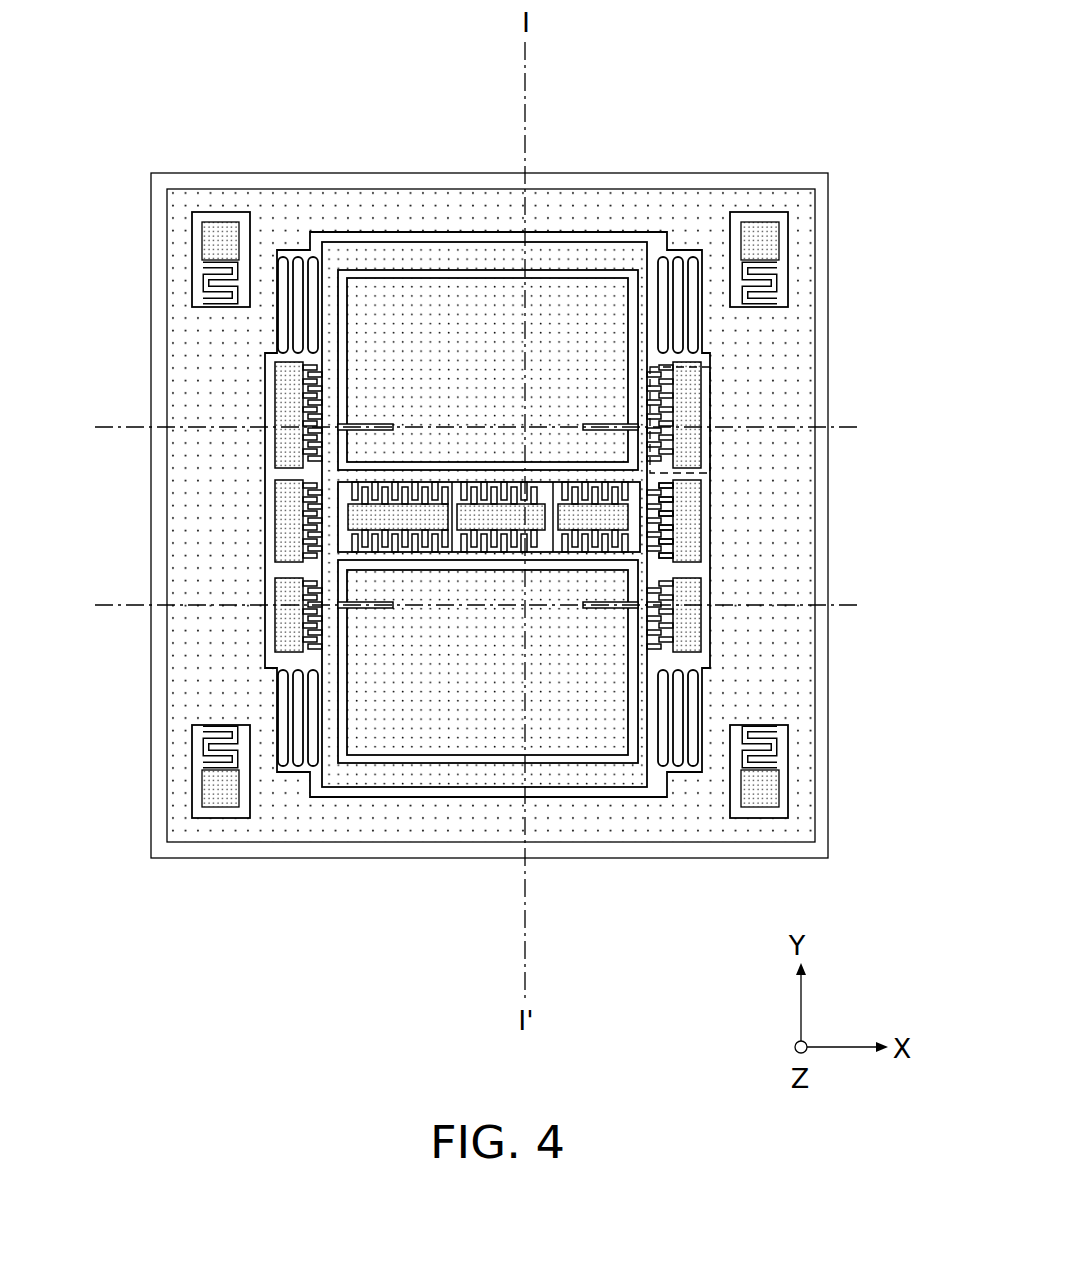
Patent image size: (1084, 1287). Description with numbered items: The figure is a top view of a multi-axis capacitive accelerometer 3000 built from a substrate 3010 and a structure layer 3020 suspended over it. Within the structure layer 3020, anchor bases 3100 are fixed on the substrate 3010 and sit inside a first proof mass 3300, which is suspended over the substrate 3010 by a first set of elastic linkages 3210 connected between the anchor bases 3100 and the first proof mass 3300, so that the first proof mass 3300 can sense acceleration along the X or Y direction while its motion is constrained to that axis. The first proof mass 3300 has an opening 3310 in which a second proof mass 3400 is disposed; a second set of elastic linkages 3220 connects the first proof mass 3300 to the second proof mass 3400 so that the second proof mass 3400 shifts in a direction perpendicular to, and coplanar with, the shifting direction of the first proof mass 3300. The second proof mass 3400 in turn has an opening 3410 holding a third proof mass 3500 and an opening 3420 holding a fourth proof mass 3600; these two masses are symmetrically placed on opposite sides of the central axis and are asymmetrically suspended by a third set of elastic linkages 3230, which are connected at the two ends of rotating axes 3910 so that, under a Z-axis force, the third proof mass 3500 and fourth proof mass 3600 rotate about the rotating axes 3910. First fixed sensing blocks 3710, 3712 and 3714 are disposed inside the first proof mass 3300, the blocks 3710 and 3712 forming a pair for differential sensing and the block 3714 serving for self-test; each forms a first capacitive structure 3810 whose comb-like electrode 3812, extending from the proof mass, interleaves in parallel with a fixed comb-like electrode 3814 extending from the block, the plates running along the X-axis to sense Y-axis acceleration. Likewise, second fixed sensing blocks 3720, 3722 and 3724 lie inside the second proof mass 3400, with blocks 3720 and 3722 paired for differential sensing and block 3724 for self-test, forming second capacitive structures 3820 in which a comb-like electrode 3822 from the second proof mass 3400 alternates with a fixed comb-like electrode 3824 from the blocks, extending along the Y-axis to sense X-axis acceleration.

The multi-axis capacitive accelerometer 3000 is at (897, 55).
The substrate 3010 is at (815, 173).
The structure layer 3020 is at (708, 182).
The anchor base 3100 is at (210, 240).
The first set of elastic linkages 3210 is at (210, 293).
The second set of elastic linkages 3220 is at (300, 250).
The third set of elastic linkages 3230 is at (360, 427).
The first proof mass 3300 is at (785, 330).
The opening 3310 is at (567, 232).
The second proof mass 3400 is at (488, 257).
The opening 3410 is at (612, 268).
The opening 3420 is at (437, 768).
The third proof mass 3500 is at (419, 290).
The fourth proof mass 3600 is at (365, 732).
The first fixed sensing block 3710 is at (657, 367).
The first fixed sensing block 3712 is at (675, 548).
The first fixed sensing block 3714 is at (680, 637).
The second fixed sensing block 3720 is at (375, 522).
The second fixed sensing block 3722 is at (465, 522).
The second fixed sensing block 3724 is at (590, 503).
The first capacitive structure 3810 is at (705, 457).
The comb-like electrode 3812 is at (675, 492).
The fixed comb-like electrode 3814 is at (675, 522).
The second capacitive structure 3820 is at (487, 556).
The comb-like electrode 3822 is at (575, 546).
The fixed comb-like electrode 3824 is at (602, 532).
The rotating axis 3910 is at (853, 427).